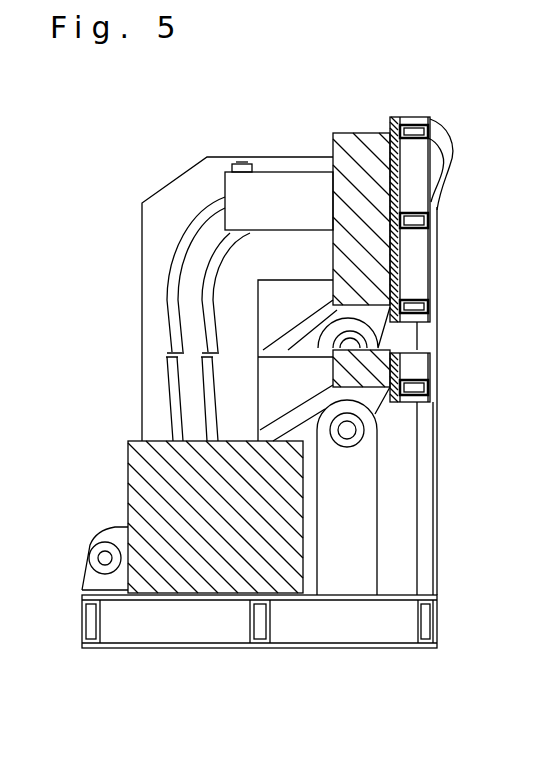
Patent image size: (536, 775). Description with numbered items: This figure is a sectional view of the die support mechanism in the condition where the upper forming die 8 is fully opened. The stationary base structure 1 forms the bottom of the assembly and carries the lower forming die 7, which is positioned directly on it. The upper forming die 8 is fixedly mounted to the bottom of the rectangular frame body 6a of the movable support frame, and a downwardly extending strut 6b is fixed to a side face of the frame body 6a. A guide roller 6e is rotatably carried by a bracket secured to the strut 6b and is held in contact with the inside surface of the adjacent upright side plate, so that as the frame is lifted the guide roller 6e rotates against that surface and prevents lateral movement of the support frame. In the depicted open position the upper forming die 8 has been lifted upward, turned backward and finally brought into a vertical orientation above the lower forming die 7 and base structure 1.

The stationary base structure 1 is at (335, 630).
The rectangular frame body 6a is at (420, 118).
The strut 6b is at (293, 196).
The guide roller 6e is at (242, 163).
The lower forming die 7 is at (146, 491).
The upper forming die 8 is at (360, 132).